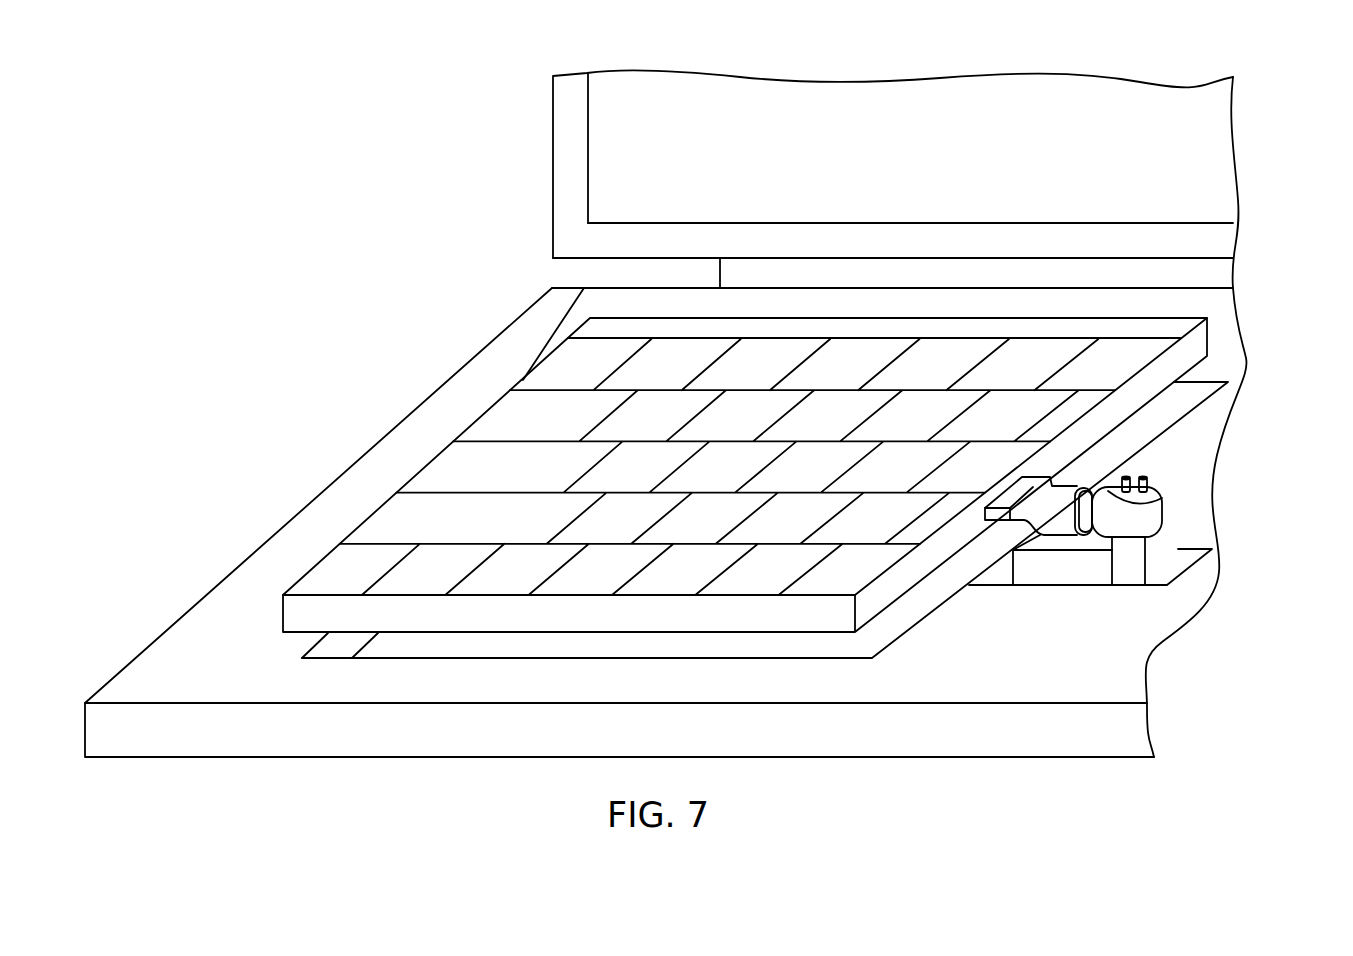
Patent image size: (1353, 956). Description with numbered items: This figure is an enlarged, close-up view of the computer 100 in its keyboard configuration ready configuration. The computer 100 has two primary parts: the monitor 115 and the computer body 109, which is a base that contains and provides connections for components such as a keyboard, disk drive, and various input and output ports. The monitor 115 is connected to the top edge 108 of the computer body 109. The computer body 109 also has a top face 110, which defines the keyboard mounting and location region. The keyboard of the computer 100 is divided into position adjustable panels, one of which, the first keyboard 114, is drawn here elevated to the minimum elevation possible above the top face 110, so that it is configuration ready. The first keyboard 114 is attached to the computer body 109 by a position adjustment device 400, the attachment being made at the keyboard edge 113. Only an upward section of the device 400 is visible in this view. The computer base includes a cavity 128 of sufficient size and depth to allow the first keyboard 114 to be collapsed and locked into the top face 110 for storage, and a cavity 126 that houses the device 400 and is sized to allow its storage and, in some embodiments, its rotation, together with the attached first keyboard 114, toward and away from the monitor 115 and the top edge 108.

The computer 100 is at (288, 125).
The top edge 108 is at (563, 302).
The computer body 109 is at (887, 733).
The top face 110 is at (1035, 677).
The keyboard edge 113 is at (803, 475).
The first keyboard 114 is at (464, 458).
The monitor 115 is at (553, 166).
The cavity 126 is at (1180, 558).
The cavity 128 is at (568, 651).
The device 400 is at (1149, 515).